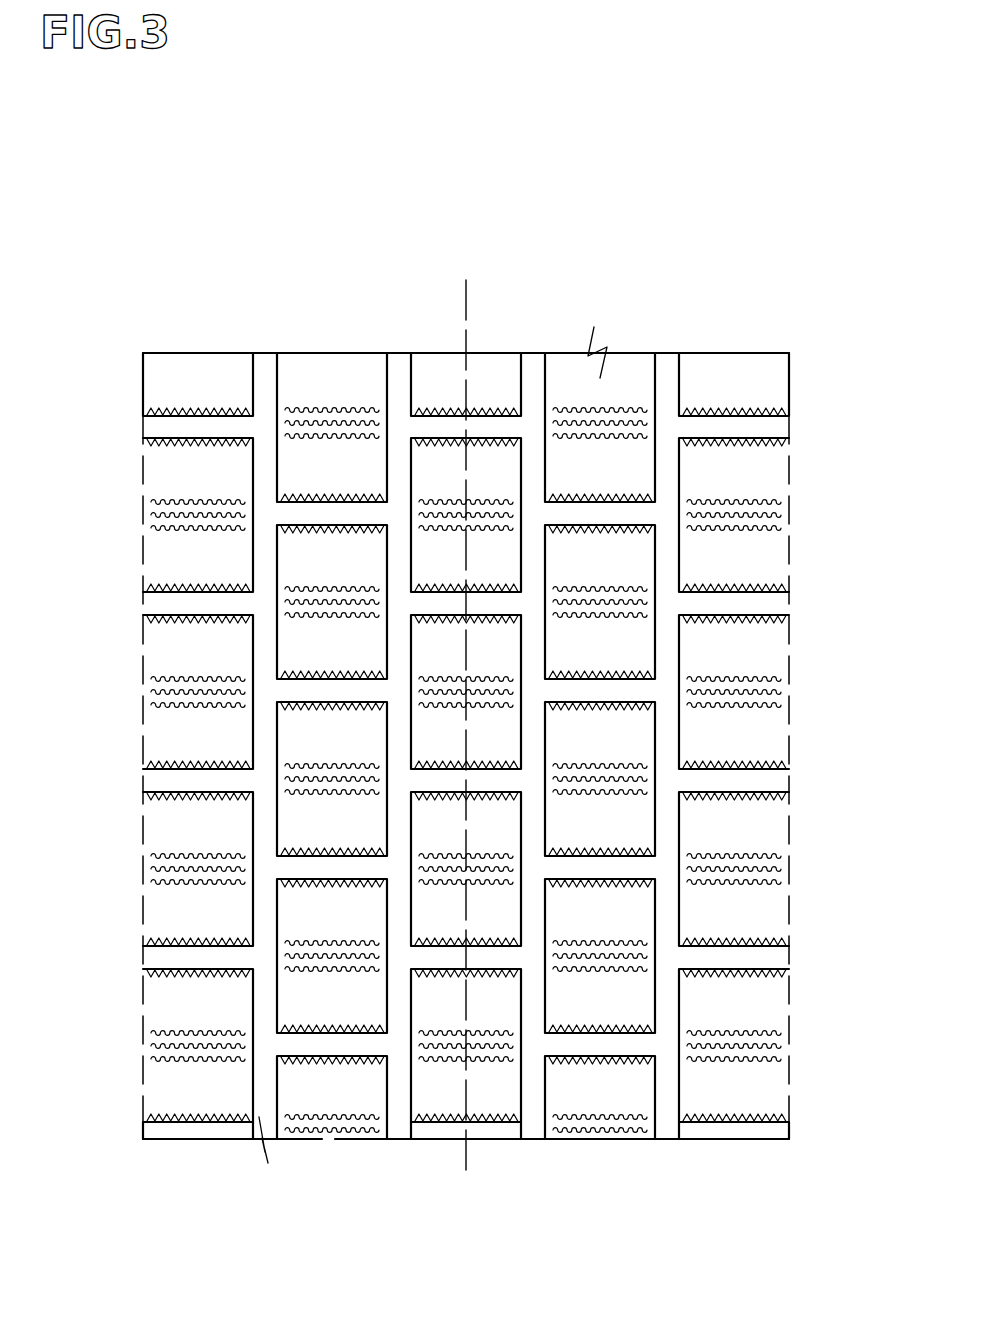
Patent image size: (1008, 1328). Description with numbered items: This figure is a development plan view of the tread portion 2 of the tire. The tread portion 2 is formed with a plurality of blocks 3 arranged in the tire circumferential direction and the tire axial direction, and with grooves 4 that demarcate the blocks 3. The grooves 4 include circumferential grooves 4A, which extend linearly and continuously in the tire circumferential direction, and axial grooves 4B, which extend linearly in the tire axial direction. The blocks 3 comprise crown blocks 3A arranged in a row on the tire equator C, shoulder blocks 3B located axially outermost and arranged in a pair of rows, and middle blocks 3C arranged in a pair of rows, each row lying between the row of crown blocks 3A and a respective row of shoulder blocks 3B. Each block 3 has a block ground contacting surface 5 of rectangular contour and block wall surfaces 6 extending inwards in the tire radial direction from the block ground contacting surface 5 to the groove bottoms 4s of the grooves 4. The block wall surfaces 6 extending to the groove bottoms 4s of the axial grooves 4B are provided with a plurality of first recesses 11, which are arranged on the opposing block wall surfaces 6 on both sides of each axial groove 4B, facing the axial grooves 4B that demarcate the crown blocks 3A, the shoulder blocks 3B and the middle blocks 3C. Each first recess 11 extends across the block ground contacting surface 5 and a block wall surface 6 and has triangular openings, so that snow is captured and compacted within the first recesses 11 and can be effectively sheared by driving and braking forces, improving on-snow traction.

The tread portion 2 is at (458, 723).
The block 3 is at (188, 735).
The crown block 3A is at (503, 1102).
The shoulder block 3B is at (737, 1090).
The middle block 3C is at (597, 1007).
The groove 4 is at (726, 606).
The circumferential groove 4A is at (525, 381).
The axial groove 4B is at (191, 971).
The groove bottom 4s is at (268, 478).
The block ground contacting surface 5 is at (743, 479).
The block wall surface 6 is at (277, 387).
The first recess 11 is at (204, 573).
The tire equator C is at (466, 708).